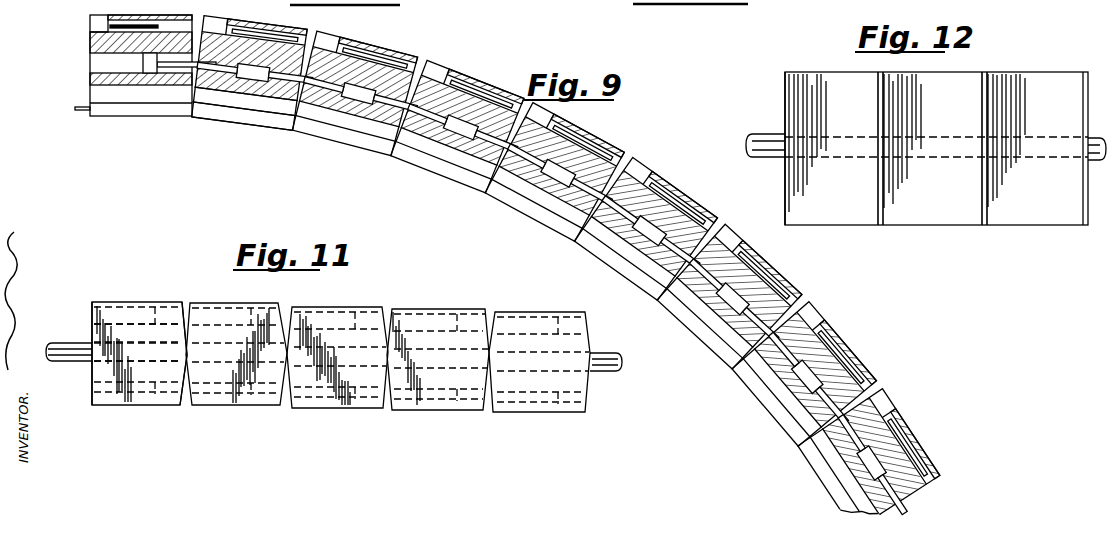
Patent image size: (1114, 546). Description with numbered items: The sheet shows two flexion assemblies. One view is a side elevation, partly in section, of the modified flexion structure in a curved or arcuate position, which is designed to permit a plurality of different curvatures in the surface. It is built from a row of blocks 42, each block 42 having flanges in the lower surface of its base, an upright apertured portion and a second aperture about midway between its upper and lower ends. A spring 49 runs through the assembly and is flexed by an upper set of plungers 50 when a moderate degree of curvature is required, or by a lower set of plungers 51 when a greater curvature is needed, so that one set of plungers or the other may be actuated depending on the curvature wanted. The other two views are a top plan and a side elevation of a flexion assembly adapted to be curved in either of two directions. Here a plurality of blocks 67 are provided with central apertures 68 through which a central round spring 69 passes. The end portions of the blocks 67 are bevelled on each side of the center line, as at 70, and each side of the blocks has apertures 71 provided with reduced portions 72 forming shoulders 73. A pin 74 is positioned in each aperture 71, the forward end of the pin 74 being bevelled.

In FIG. 9, the block 42 is at (245, 105).
In FIG. 9, the spring 49 is at (83, 108).
In FIG. 9, the upper set of plungers 50 is at (98, 26).
In FIG. 9, the lower set of plungers 51 is at (153, 72).
In FIG. 12, the block 67 is at (857, 210).
In FIG. 11, the block 67 is at (142, 405).
In FIG. 12, the central aperture 68 is at (1073, 160).
In FIG. 11, the central aperture 68 is at (90, 362).
In FIG. 12, the central round spring 69 is at (755, 133).
In FIG. 11, the central round spring 69 is at (49, 343).
In FIG. 12, the bevelled end portion 70 is at (982, 228).
In FIG. 11, the bevelled end portion 70 is at (183, 304).
In FIG. 11, the aperture 71 is at (167, 310).
In FIG. 11, the reduced portion 72 is at (92, 312).
In FIG. 11, the shoulder 73 is at (130, 312).
In FIG. 11, the pin 74 is at (187, 313).